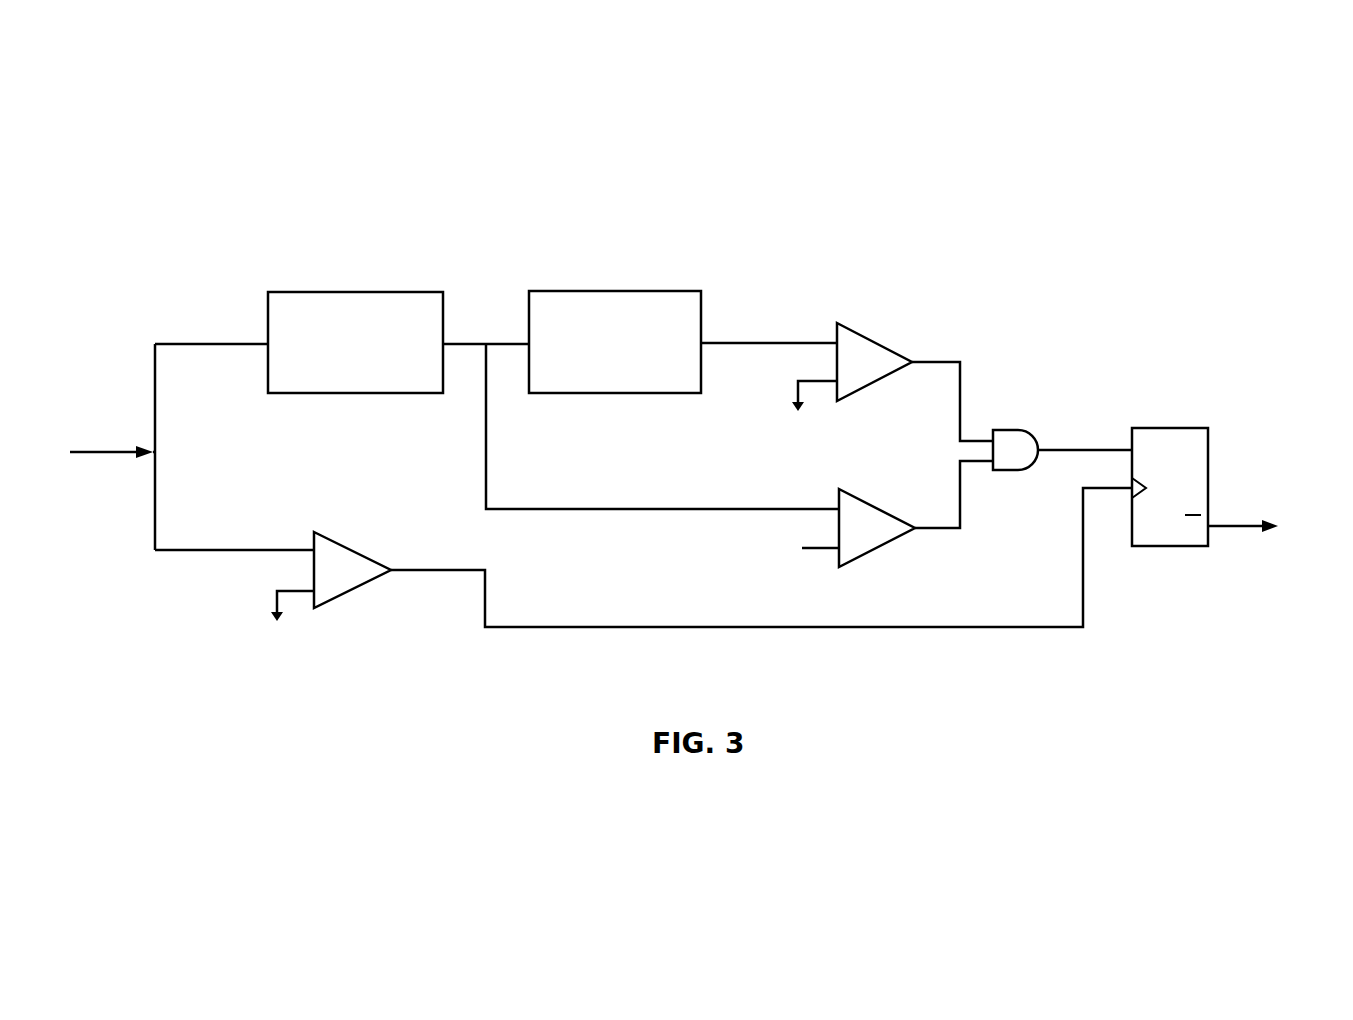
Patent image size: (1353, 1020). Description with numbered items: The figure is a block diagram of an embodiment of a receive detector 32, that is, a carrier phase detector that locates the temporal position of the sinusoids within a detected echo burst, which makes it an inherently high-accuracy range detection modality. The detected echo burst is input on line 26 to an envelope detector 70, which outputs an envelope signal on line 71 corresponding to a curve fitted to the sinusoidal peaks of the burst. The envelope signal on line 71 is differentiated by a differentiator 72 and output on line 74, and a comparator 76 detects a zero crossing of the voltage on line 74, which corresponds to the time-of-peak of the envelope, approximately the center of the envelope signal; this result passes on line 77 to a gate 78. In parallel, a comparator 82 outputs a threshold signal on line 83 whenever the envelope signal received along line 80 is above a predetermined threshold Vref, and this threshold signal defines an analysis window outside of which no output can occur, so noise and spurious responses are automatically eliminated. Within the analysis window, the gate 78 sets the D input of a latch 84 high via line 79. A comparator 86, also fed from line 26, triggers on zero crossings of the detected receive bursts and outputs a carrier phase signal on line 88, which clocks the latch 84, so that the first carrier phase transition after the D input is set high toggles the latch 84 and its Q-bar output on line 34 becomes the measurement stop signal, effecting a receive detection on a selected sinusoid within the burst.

The line 26 is at (109, 442).
The receive detector 32 is at (1063, 264).
The line 34 is at (1241, 537).
The envelope detector 70 is at (377, 288).
The line 71 is at (512, 338).
The differentiator 72 is at (633, 288).
The line 74 is at (788, 338).
The comparator 76 is at (888, 343).
The line 77 is at (932, 353).
The gate 78 is at (1011, 425).
The line 79 is at (1067, 455).
The line 80 is at (686, 506).
The comparator 82 is at (893, 508).
The line 83 is at (942, 535).
The latch 84 is at (1190, 425).
The comparator 86 is at (368, 553).
The line 88 is at (643, 622).